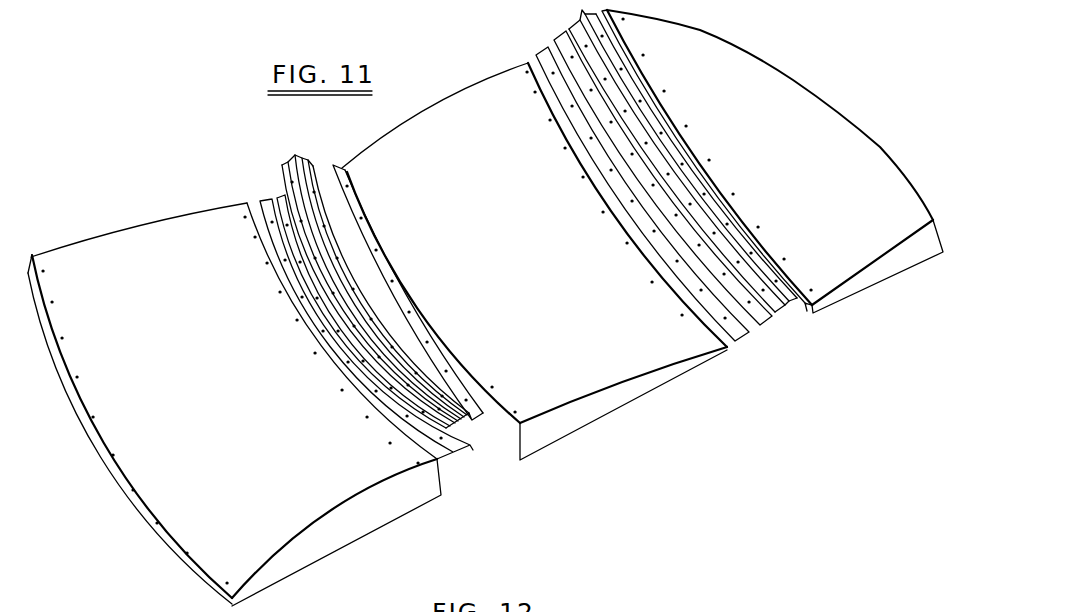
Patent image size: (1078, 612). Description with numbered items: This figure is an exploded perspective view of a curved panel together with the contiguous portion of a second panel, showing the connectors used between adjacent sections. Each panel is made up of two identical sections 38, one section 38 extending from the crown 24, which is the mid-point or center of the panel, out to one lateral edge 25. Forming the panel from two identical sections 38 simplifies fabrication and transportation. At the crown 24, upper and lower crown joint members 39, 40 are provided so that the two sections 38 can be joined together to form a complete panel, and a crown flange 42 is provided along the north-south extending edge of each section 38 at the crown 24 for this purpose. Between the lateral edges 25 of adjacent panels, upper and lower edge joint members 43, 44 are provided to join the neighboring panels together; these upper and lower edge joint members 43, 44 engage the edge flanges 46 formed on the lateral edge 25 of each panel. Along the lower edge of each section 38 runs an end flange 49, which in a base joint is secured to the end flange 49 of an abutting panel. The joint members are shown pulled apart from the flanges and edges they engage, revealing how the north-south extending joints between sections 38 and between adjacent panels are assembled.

The crown 24 is at (500, 402).
The lateral edge 25 is at (203, 560).
The section 38 is at (230, 399).
The upper crown joint member 39 is at (483, 420).
The lower crown joint member 40 is at (465, 458).
The crown flange 42 is at (331, 180).
The upper edge joint member 43 is at (580, 13).
The lower edge joint member 44 is at (537, 55).
The edge flange 46 is at (805, 308).
The end flange 49 is at (320, 553).